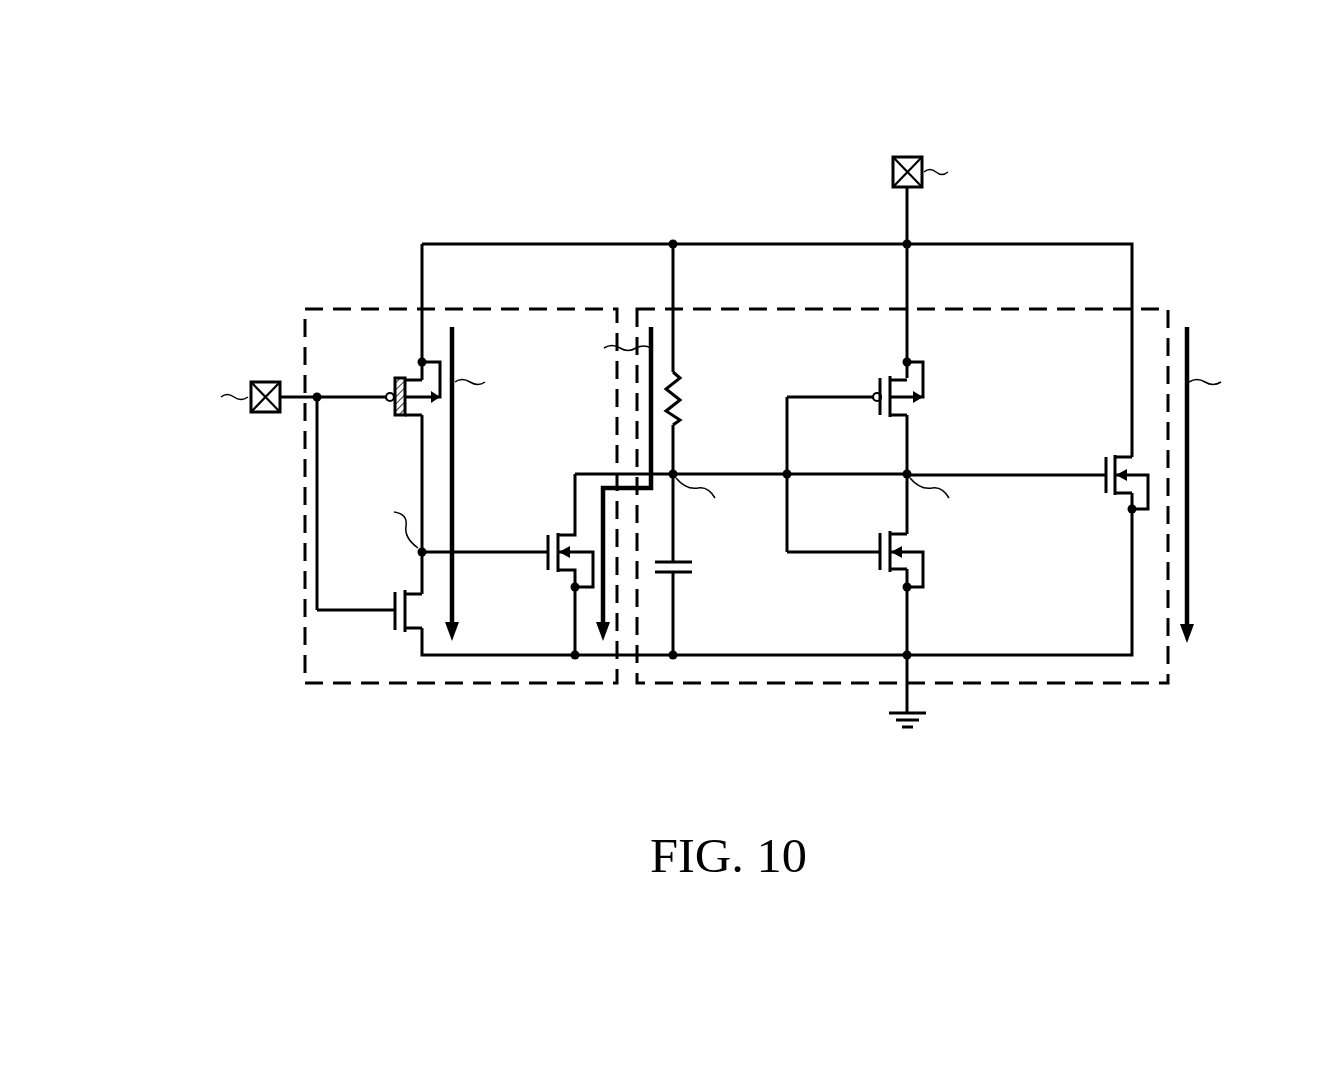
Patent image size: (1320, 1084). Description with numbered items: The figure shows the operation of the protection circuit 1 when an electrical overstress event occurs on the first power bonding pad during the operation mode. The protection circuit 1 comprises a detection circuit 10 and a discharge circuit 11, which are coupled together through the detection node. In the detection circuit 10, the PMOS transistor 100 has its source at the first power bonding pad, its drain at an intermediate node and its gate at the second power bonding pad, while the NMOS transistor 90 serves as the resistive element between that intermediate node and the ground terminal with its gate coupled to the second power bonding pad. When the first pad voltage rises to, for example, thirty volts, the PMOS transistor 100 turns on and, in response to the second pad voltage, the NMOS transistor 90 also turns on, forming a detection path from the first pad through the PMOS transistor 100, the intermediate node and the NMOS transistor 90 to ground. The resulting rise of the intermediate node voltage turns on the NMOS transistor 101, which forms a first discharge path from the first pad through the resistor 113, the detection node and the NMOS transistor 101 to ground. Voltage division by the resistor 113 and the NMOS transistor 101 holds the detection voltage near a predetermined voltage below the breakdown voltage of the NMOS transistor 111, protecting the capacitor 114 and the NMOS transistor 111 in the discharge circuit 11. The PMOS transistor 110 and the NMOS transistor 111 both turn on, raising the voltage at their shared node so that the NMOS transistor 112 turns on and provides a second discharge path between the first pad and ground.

The protection circuit 1 is at (278, 158).
The detection circuit 10 is at (305, 309).
The discharge circuit 11 is at (737, 309).
The NMOS transistor 90 is at (408, 592).
The PMOS transistor 100 is at (398, 378).
The NMOS transistor 101 is at (553, 532).
The PMOS transistor 110 is at (887, 378).
The NMOS transistor 111 is at (889, 532).
The NMOS transistor 112 is at (1115, 457).
The resistor 113 is at (681, 392).
The capacitor 114 is at (679, 574).